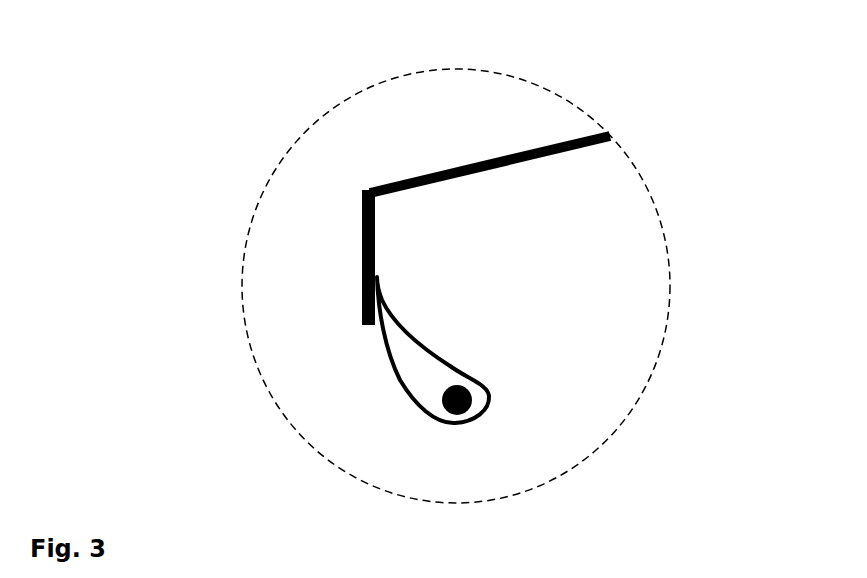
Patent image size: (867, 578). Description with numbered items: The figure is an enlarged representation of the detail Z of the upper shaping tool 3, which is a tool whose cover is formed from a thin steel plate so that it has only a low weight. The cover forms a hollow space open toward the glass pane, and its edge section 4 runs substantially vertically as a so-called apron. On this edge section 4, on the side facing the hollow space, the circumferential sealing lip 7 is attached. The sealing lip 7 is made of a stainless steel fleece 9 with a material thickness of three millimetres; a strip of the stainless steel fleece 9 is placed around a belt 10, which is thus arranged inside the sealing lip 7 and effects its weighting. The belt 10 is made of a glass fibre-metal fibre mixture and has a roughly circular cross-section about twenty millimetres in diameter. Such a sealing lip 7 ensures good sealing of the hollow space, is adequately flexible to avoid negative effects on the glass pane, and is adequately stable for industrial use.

The detail Z is at (302, 137).
The upper shaping tool 3 is at (484, 160).
The edge section 4 is at (362, 242).
The sealing lip 7 is at (585, 333).
The stainless steel fleece 9 is at (432, 355).
The belt 10 is at (471, 396).